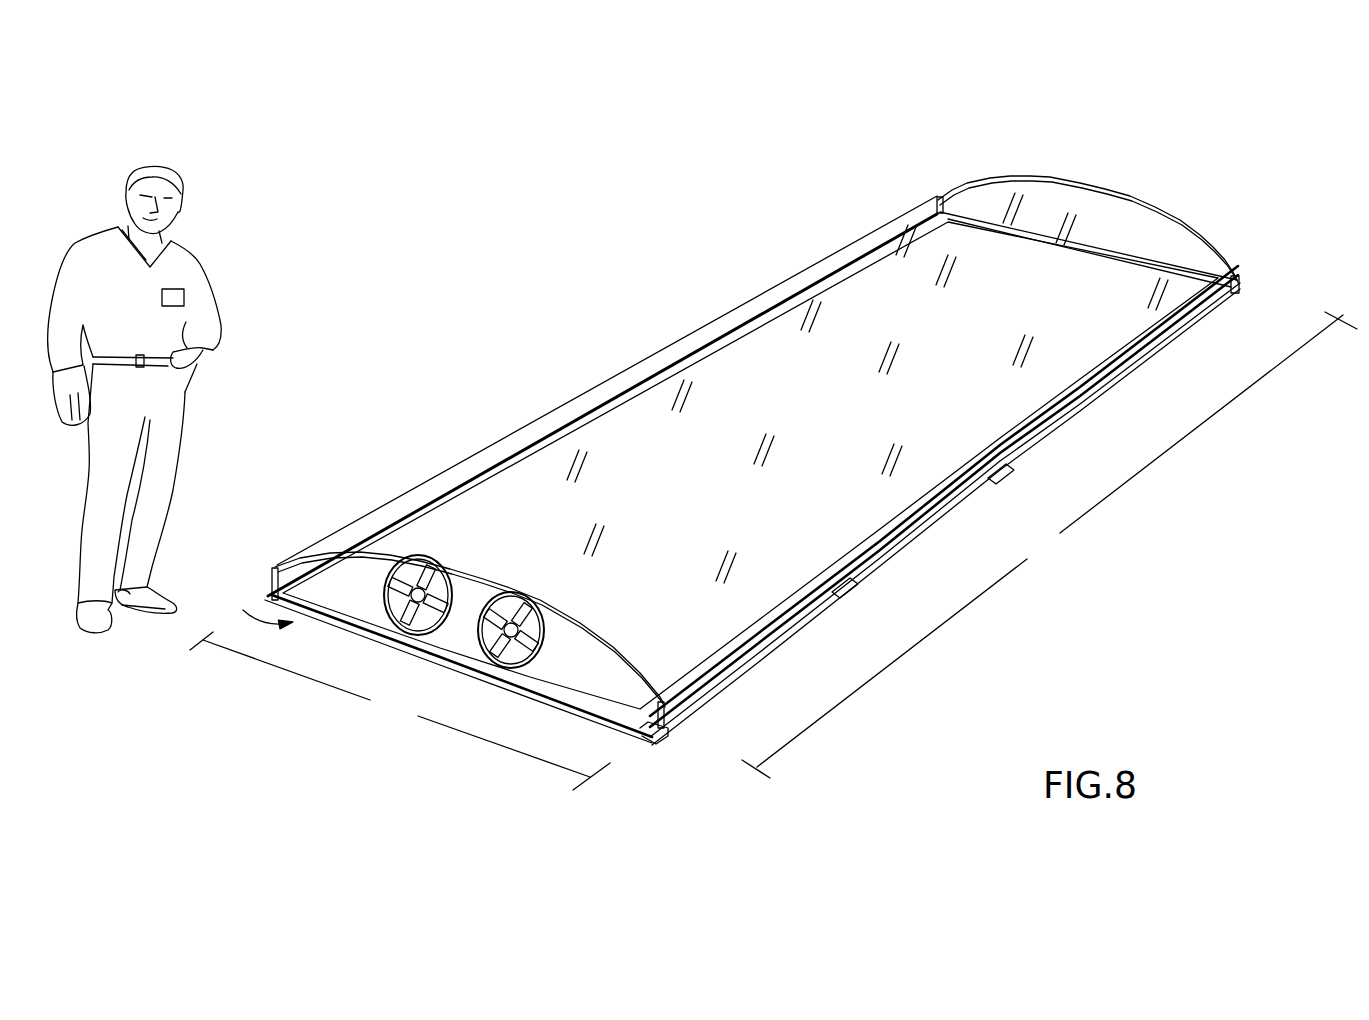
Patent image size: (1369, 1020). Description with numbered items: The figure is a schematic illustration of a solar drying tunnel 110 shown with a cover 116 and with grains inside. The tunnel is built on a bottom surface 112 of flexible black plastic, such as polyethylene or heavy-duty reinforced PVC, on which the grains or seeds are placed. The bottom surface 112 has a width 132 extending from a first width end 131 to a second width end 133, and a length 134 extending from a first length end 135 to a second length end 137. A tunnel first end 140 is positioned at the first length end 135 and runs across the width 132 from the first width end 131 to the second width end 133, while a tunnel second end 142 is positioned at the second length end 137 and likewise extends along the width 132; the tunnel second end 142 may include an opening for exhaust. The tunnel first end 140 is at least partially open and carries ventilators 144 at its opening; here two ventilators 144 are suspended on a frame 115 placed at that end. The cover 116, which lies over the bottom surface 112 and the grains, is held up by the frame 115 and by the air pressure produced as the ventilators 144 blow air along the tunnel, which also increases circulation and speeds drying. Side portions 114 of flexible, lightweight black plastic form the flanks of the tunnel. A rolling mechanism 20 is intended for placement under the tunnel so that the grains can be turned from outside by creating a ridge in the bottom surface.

The solar drying tunnel 110 is at (583, 170).
The tunnel second end 142 is at (1153, 158).
The second length end 137 is at (1242, 298).
The rolling mechanism 20 is at (423, 536).
The frame 115 is at (300, 556).
The cover 116 is at (940, 518).
The first width end 131 is at (272, 596).
The tunnel first end 140 is at (241, 606).
The ventilator 144 is at (458, 632).
The side portion 114 is at (540, 687).
The bottom surface 112 is at (605, 686).
The first length end 135 is at (665, 728).
The second width end 133 is at (644, 742).
The width 132 is at (400, 711).
The length 134 is at (1049, 545).